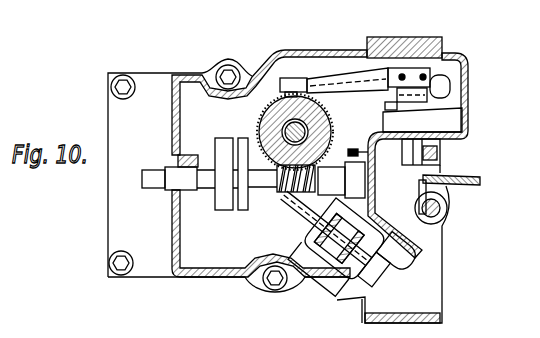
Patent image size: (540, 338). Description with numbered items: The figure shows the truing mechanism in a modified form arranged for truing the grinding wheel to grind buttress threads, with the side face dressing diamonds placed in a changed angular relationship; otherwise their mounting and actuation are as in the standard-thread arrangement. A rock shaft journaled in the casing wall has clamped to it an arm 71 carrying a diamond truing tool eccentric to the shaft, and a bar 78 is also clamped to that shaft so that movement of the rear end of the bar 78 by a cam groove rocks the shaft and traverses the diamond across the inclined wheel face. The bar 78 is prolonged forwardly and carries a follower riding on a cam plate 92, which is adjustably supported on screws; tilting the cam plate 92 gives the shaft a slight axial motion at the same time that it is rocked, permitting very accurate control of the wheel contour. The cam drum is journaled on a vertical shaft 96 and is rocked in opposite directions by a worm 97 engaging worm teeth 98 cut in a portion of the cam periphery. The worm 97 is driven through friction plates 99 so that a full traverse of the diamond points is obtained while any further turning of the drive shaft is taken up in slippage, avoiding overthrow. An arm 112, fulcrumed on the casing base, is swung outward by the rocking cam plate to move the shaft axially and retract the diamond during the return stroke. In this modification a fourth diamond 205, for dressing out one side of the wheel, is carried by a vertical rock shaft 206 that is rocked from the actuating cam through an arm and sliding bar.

The arm 112 is at (288, 77).
The bar 78 is at (343, 82).
The worm teeth 98 is at (263, 113).
The vertical shaft 96 is at (331, 117).
The arm 71 is at (425, 153).
The fourth diamond 205 is at (450, 189).
The vertical rock shaft 206 is at (433, 216).
The cam plate 92 is at (401, 268).
The worm 97 is at (291, 197).
The friction plates 99 is at (219, 210).